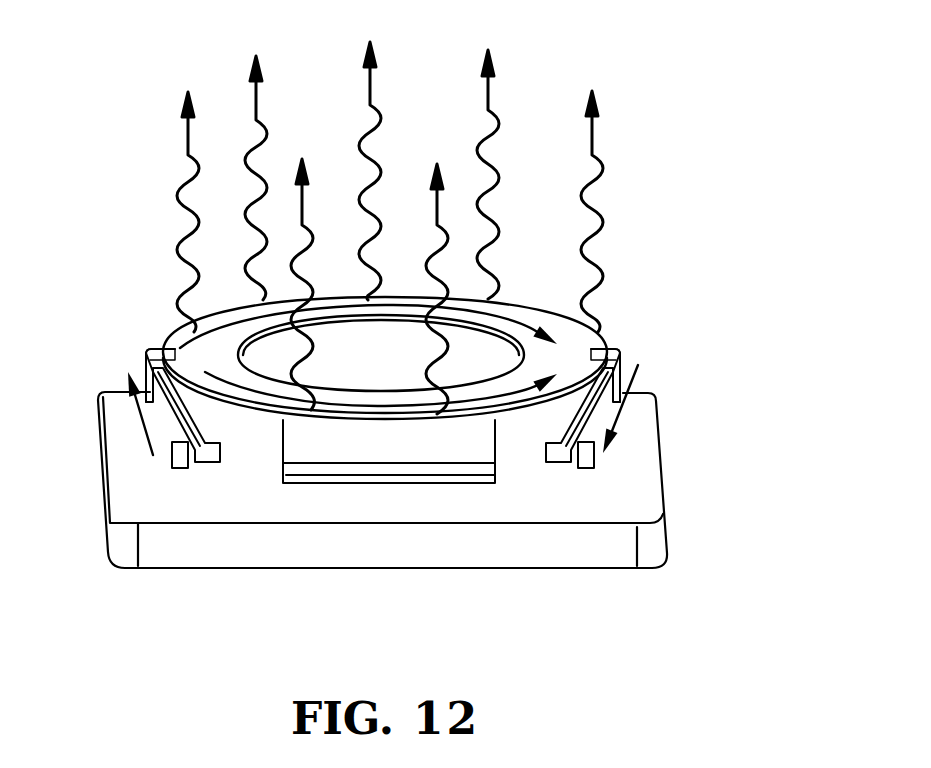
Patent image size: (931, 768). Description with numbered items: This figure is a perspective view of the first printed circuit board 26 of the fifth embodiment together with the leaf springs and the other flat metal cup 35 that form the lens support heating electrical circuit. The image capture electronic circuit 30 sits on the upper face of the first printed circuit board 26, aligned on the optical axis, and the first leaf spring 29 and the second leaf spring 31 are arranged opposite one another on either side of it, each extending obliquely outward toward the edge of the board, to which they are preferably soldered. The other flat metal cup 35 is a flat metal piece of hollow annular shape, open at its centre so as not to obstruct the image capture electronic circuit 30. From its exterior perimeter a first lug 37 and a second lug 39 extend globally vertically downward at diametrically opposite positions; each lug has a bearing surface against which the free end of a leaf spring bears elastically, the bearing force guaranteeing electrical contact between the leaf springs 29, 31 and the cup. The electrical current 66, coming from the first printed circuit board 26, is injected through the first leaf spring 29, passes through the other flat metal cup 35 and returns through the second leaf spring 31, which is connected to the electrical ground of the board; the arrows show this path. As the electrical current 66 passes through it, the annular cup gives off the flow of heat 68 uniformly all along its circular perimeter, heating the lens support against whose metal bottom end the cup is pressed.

The first printed circuit board 26 is at (702, 507).
The first leaf spring 29 is at (170, 455).
The image capture electronic circuit 30 is at (345, 448).
The second leaf spring 31 is at (582, 435).
The other flat metal cup 35 is at (630, 321).
The first lug 37 is at (150, 352).
The second lug 39 is at (619, 356).
The electrical current 66 is at (525, 308).
The flow of heat 68 is at (178, 193).